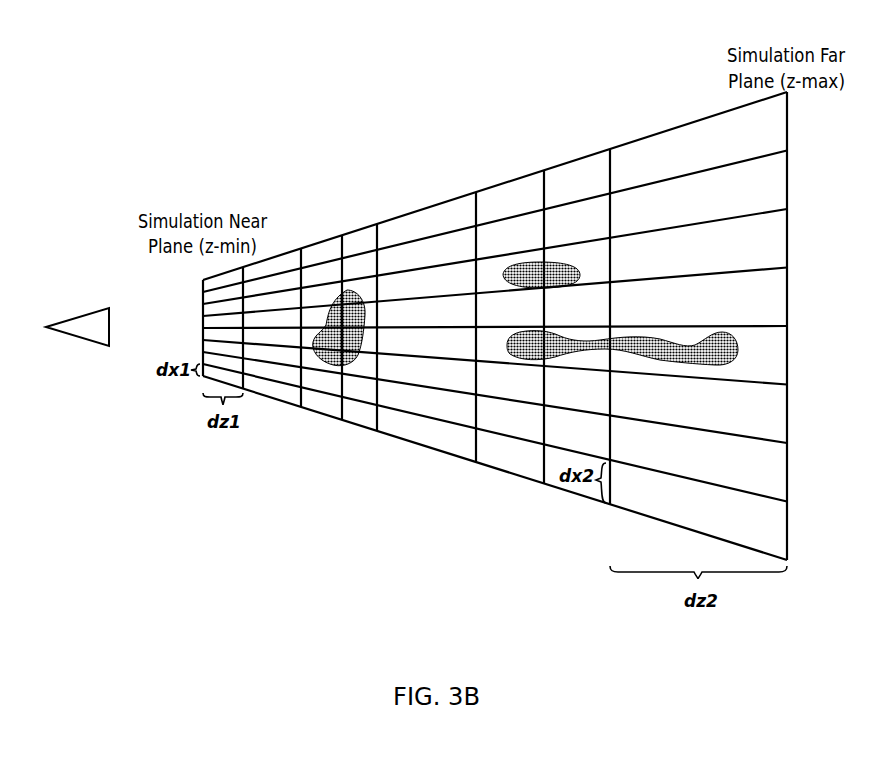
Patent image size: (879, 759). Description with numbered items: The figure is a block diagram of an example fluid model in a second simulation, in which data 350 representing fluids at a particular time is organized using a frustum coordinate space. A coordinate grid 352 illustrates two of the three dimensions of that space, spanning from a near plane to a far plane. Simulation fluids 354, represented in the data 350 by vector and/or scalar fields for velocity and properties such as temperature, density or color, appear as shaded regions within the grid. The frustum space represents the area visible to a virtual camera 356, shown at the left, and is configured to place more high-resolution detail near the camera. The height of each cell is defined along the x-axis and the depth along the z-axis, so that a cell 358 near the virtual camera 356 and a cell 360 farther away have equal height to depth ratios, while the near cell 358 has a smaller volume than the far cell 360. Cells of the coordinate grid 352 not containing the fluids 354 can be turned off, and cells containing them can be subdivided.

The data 350 is at (92, 60).
The coordinate grid 352 is at (787, 263).
The simulation fluids 354 is at (637, 331).
The virtual camera 356 is at (88, 313).
The cell 358 is at (203, 377).
The cell 360 is at (610, 506).